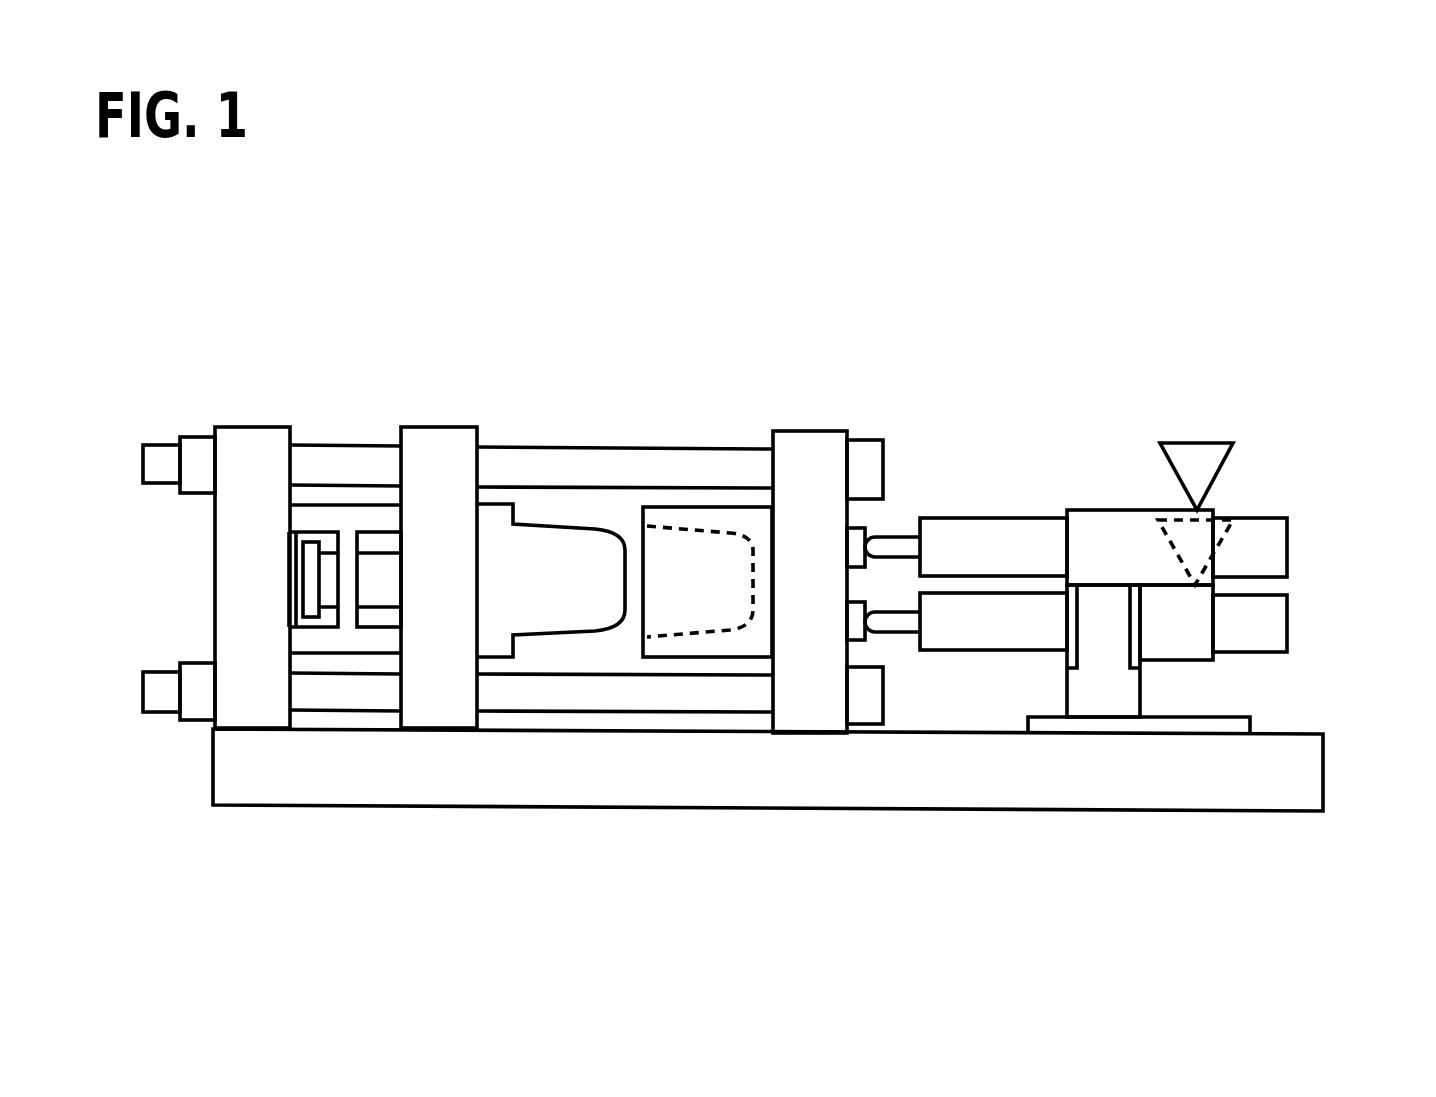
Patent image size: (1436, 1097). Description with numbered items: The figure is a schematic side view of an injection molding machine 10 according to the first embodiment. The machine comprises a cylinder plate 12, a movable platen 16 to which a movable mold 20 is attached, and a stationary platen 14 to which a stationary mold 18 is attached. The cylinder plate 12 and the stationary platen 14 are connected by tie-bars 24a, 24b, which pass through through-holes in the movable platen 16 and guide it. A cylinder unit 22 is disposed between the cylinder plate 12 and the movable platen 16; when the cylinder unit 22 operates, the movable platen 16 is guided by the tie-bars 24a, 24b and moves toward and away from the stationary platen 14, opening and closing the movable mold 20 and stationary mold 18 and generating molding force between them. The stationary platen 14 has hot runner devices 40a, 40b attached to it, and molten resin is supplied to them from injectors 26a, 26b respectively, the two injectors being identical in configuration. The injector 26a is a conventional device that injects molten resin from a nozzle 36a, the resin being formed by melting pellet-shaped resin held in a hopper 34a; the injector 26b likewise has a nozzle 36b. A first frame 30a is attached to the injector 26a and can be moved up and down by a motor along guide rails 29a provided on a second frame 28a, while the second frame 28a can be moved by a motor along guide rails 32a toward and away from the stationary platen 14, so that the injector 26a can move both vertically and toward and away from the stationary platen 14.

The injection molding machine 10 is at (1128, 378).
The cylinder plate 12 is at (250, 427).
The stationary platen 14 is at (808, 431).
The movable platen 16 is at (440, 427).
The stationary mold 18 is at (720, 505).
The movable mold 20 is at (503, 503).
The cylinder unit 22 is at (377, 567).
The tie-bar 24a is at (642, 449).
The tie-bar 24b is at (618, 713).
The injector 26a is at (1272, 520).
The injector 26b is at (1288, 622).
The second frame 28a is at (1067, 688).
The guide rails 29a is at (1133, 653).
The first frame 30a is at (1090, 510).
The guide rails 32a is at (1250, 727).
The hopper 34a is at (1195, 443).
The nozzle 36a is at (900, 533).
The nozzle 36b is at (890, 630).
The hot runner device 40a is at (863, 527).
The hot runner device 40b is at (853, 642).